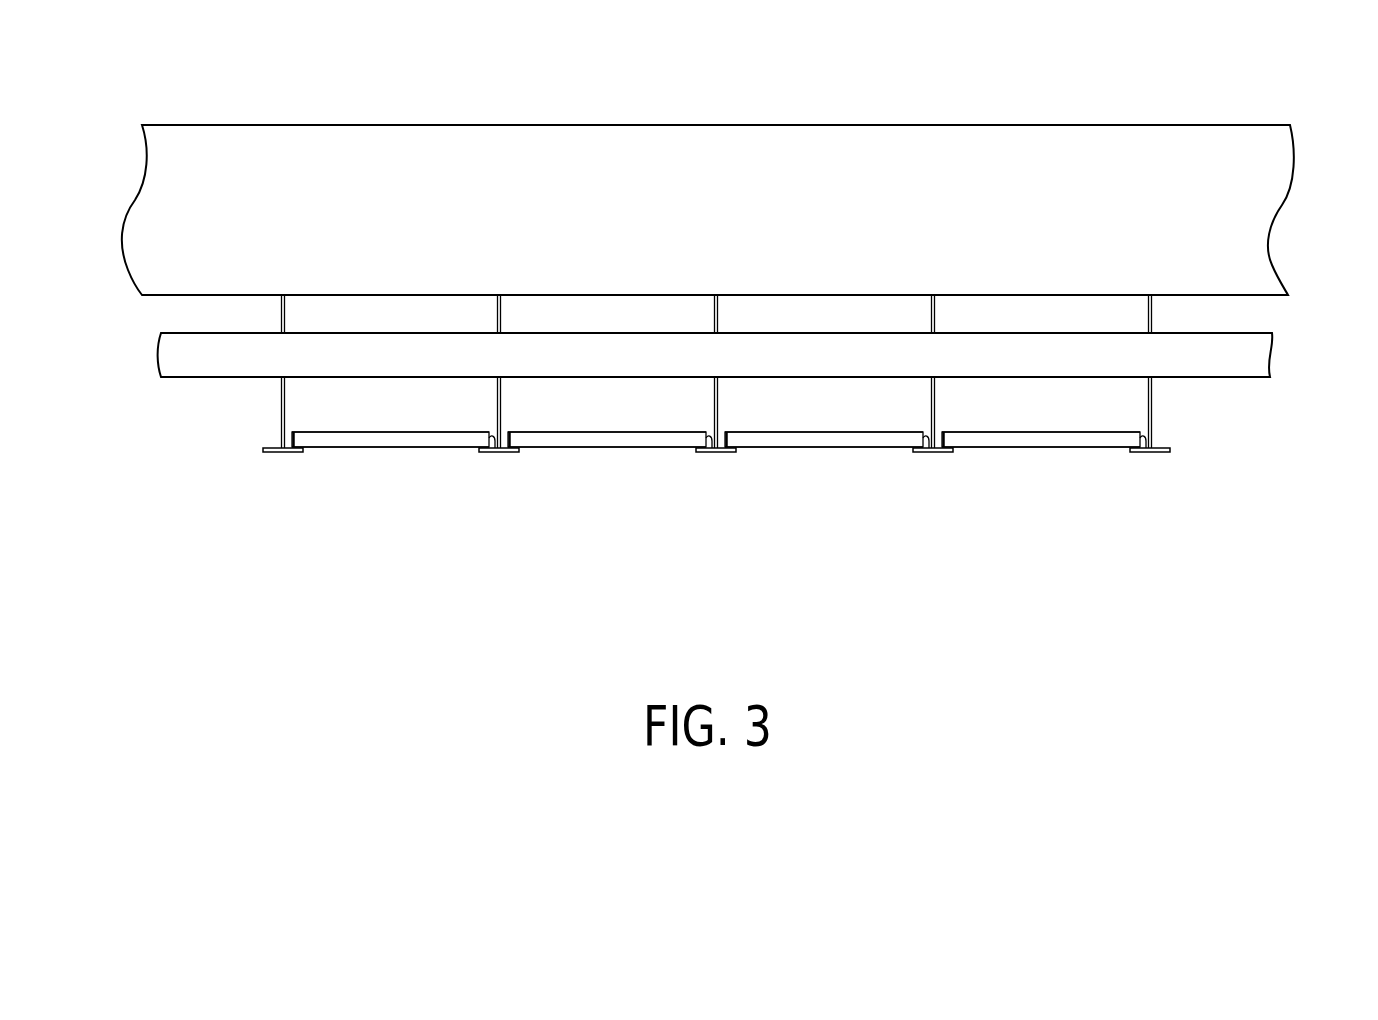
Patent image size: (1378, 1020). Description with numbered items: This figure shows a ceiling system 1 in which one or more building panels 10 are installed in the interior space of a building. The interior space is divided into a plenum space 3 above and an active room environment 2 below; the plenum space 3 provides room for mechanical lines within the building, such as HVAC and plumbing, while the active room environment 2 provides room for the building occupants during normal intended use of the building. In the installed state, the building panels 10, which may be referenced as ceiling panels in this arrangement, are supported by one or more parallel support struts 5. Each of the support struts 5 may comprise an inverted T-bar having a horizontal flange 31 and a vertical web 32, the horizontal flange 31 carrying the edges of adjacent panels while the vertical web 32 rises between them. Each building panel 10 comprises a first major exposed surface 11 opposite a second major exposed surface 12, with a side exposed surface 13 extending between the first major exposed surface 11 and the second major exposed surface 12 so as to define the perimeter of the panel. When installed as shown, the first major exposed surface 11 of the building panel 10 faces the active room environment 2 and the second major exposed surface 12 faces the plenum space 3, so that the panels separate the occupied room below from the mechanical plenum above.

The ceiling system 1 is at (88, 333).
The active room environment 2 is at (646, 520).
The plenum space 3 is at (165, 404).
The support strut 5 is at (286, 409).
The building panel 10 is at (380, 457).
The first major exposed surface 11 is at (430, 449).
The second major exposed surface 12 is at (408, 432).
The side exposed surface 13 is at (505, 447).
The horizontal flange 31 is at (277, 455).
The vertical web 32 is at (282, 413).